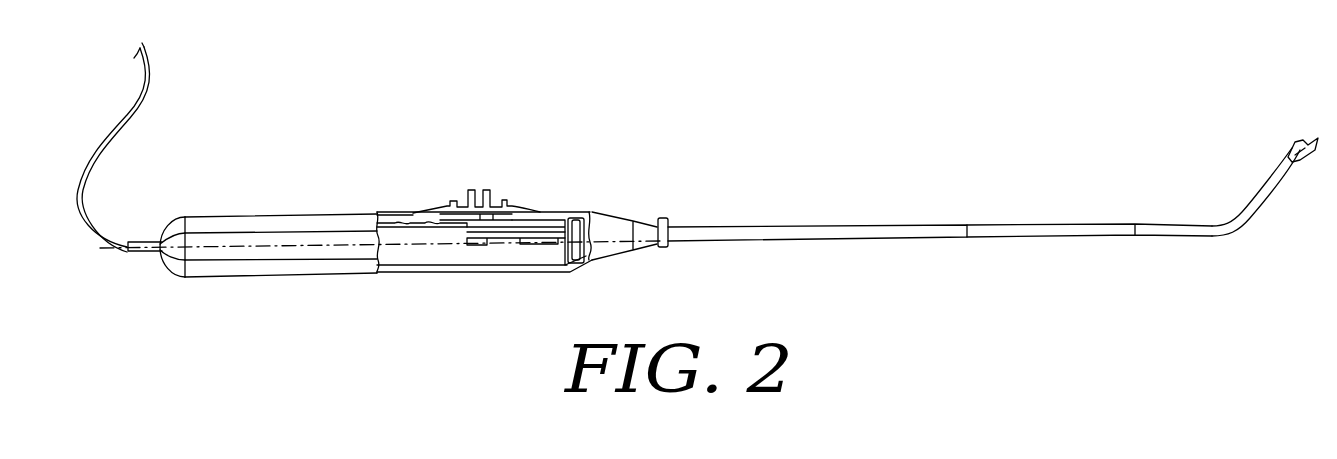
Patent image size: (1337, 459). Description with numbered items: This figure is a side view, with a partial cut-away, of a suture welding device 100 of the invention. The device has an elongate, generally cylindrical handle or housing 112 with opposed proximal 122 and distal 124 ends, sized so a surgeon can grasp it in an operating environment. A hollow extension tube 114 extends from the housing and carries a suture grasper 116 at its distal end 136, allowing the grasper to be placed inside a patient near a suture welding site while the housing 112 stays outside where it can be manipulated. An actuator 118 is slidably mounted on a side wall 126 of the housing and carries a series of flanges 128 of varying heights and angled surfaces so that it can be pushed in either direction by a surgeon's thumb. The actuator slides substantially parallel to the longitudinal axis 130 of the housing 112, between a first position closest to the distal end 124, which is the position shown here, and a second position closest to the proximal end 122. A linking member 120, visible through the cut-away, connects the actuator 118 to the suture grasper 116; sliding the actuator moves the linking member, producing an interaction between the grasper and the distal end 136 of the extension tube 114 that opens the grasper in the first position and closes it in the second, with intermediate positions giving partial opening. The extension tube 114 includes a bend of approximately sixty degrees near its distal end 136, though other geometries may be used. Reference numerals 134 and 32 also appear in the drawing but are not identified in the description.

The suture welding device 100 is at (706, 161).
The handle or housing 112 is at (260, 277).
The hollow extension tube 114 is at (920, 238).
The suture grasper 116 is at (1273, 154).
The actuator 118 is at (423, 212).
The linking member 120 is at (530, 245).
The proximal end 122 is at (171, 221).
The distal end 124 is at (665, 246).
The side wall 126 is at (283, 227).
The flanges 128 is at (445, 184).
The longitudinal axis 130 is at (142, 254).
The shaft proximal portion 134 is at (720, 226).
The distal end of extension tube 136 is at (1275, 195).
The drive rod 32 is at (467, 245).